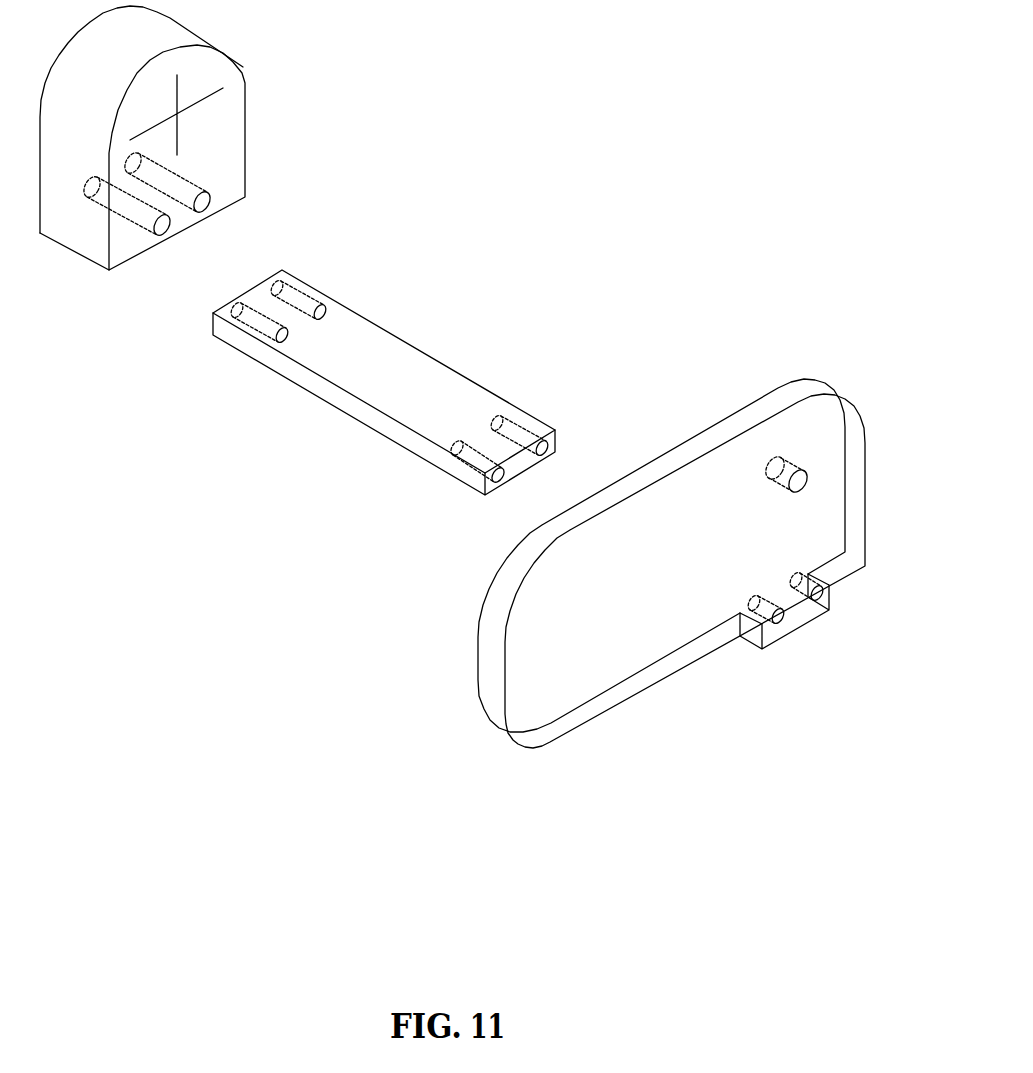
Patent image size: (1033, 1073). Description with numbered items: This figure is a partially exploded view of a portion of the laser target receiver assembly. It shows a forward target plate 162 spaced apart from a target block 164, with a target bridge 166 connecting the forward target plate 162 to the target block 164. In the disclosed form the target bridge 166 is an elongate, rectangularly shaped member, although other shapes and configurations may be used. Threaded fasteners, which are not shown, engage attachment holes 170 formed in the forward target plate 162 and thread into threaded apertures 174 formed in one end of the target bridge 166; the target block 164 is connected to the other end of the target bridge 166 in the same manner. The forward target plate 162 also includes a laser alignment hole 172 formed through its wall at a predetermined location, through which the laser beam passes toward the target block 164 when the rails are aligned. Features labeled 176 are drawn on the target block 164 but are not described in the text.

The forward target plate 162 is at (763, 403).
The target block 164 is at (233, 56).
The target bridge 166 is at (413, 347).
The attachment holes 170 is at (819, 601).
The laser alignment hole 172 is at (792, 470).
The threaded apertures 174 is at (272, 282).
The housing holes 176 is at (205, 213).